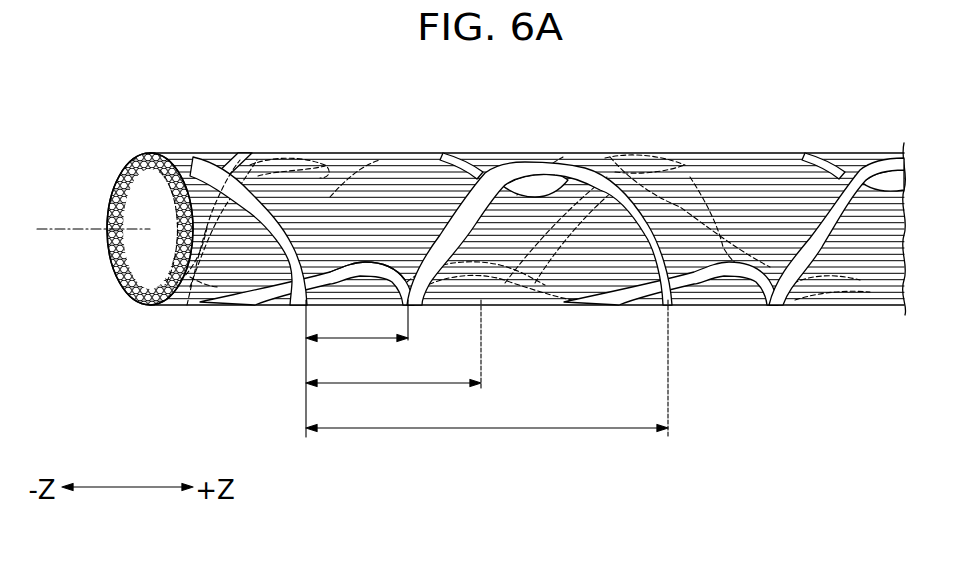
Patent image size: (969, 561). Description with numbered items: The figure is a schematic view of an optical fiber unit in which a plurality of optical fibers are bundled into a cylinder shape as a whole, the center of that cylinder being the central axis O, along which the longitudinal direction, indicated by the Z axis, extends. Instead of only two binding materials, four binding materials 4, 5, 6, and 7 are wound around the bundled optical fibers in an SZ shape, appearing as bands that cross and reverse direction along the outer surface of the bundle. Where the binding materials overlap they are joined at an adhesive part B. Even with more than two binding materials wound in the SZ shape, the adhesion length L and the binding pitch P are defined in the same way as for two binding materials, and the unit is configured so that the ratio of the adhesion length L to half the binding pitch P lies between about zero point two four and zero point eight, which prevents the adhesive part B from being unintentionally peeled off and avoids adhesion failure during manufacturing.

The binding material 4 is at (232, 160).
The binding material 5 is at (275, 220).
The binding material 6 is at (278, 300).
The binding material 7 is at (187, 305).
The adhesive part B is at (361, 257).
The central axis O is at (52, 228).
The adhesion length L is at (357, 326).
The binding pitch P is at (487, 416).